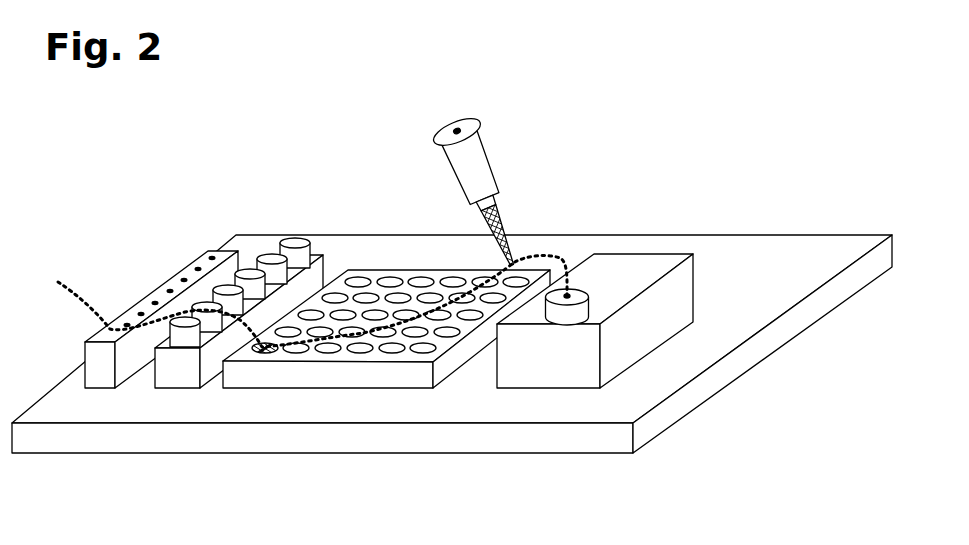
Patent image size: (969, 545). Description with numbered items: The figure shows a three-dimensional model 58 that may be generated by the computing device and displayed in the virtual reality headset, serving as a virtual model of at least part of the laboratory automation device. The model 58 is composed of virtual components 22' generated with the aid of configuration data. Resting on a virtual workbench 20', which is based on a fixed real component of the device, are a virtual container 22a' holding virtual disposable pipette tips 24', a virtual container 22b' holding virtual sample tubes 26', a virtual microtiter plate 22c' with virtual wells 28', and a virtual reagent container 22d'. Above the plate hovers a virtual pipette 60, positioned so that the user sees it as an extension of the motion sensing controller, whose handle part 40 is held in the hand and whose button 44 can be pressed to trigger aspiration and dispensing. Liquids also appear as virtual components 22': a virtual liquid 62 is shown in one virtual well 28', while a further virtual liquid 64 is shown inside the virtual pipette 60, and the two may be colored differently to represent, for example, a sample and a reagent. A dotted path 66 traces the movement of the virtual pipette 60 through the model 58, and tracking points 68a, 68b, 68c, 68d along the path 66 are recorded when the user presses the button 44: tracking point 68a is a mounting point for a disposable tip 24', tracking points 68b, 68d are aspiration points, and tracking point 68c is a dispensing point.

The virtual workbench 20' is at (452, 379).
The virtual components 22' is at (878, 191).
The virtual container 22a' is at (154, 387).
The virtual container 22b' is at (239, 389).
The virtual microtiter plate 22c' is at (386, 396).
The virtual reagent container 22d' is at (595, 388).
The virtual disposable pipette tips 24' is at (179, 251).
The virtual sample tubes 26' is at (254, 254).
The virtual wells 28' is at (402, 264).
The handle part 40 is at (488, 152).
The button 44 is at (455, 128).
The three-dimensional model 58 is at (734, 124).
The virtual pipette 60 is at (500, 208).
The virtual liquid 62 is at (272, 354).
The virtual liquid 64 is at (511, 242).
The path 66 is at (110, 327).
The tracking point 68a is at (90, 330).
The tracking point 68b is at (183, 342).
The tracking point 68c is at (248, 360).
The tracking point 68d is at (579, 282).